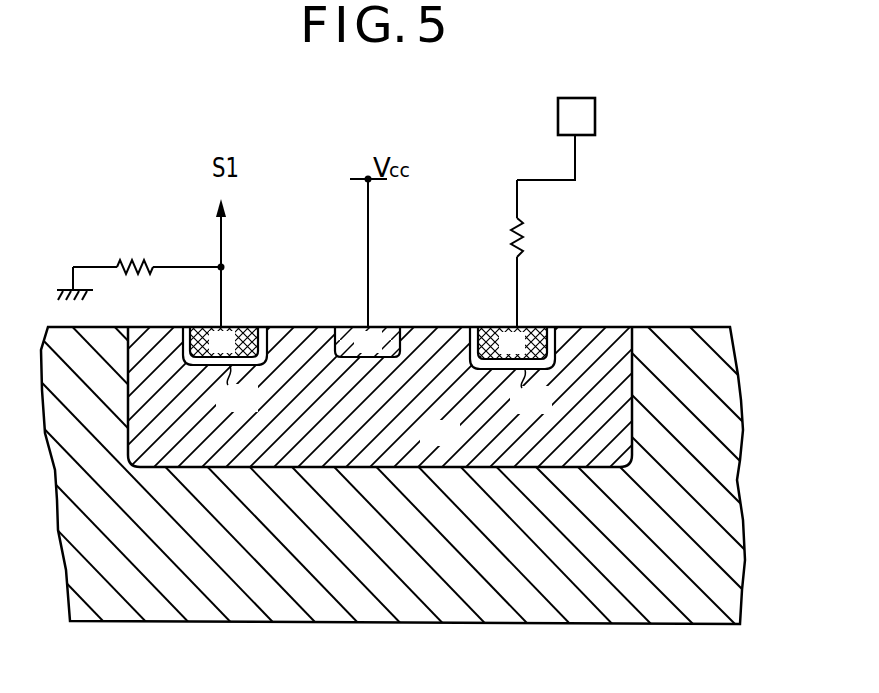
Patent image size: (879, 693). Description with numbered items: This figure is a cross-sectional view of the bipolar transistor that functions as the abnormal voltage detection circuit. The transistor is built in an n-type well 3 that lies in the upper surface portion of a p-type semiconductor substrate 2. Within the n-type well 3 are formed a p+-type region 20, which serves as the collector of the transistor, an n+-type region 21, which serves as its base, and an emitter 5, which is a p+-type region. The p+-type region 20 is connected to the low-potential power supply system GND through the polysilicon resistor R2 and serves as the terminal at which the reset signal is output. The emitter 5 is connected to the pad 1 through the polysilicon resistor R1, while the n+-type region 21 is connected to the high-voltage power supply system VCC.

The pad 1 is at (597, 120).
The p-type semiconductor substrate 2 is at (395, 623).
The n-type well 3 is at (627, 433).
The emitter 5 is at (537, 327).
The p+-type region 20 is at (238, 327).
The n+-type region 21 is at (390, 327).
The polysilicon resistor R1 is at (528, 243).
The polysilicon resistor R2 is at (139, 262).